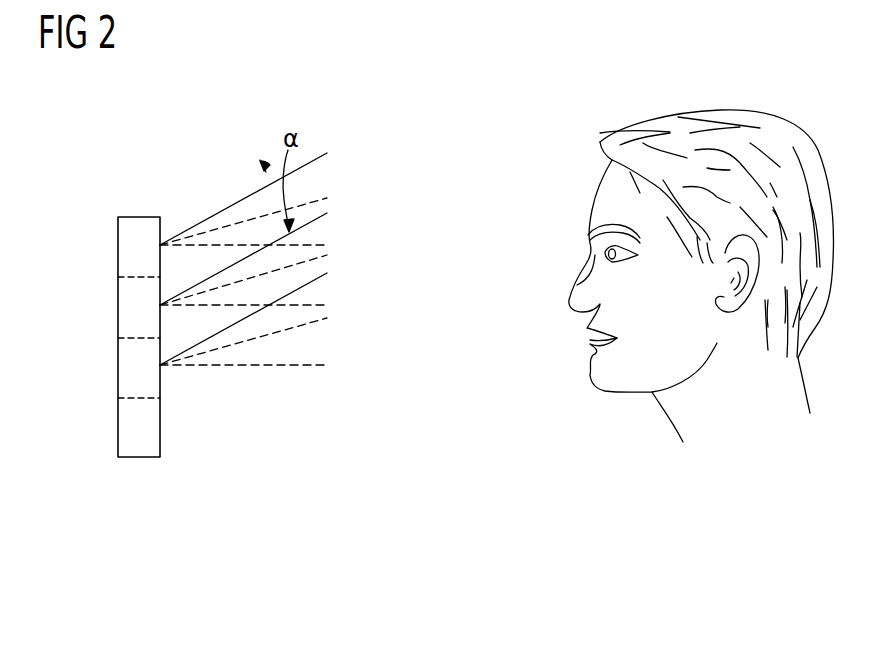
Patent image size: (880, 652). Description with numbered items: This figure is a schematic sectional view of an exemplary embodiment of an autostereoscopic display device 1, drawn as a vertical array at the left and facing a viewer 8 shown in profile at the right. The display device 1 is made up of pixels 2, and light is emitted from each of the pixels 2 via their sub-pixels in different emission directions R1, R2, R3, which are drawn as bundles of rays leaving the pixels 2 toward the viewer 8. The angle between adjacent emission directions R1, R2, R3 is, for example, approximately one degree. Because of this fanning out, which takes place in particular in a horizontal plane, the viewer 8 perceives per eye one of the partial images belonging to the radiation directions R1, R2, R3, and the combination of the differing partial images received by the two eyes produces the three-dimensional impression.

The display device 1 is at (130, 191).
The pixels 2 is at (118, 424).
The viewer 8 is at (565, 169).
The emission direction R1 is at (327, 158).
The emission direction R2 is at (327, 200).
The emission direction R3 is at (327, 246).